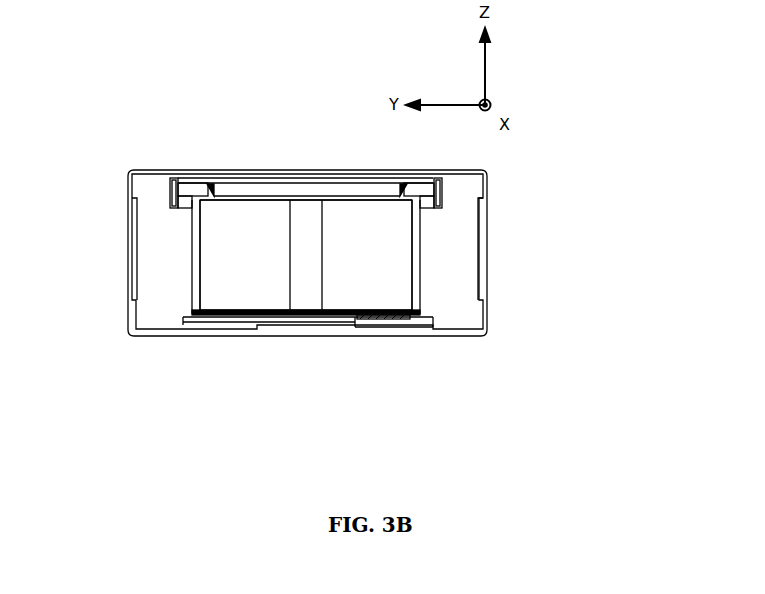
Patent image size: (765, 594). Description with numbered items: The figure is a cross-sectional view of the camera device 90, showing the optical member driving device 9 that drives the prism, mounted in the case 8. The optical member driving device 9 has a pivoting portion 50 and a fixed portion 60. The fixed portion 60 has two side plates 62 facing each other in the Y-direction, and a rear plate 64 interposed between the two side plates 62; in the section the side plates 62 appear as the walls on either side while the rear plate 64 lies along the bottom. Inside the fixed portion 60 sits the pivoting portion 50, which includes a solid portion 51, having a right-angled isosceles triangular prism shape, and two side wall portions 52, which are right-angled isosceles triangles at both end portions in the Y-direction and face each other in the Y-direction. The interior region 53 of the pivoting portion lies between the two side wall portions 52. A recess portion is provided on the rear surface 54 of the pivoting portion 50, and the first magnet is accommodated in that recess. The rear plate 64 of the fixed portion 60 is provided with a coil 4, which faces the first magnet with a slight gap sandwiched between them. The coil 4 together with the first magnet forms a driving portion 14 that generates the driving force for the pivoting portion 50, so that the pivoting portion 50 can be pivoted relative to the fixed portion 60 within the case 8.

The case 8 is at (492, 168).
The optical member driving device 9 is at (300, 118).
The camera device 90 is at (304, 234).
The pivoting portion 50 is at (304, 247).
The solid portion 51 is at (179, 190).
The side wall portions 52 is at (196, 258).
The holder interior 53 is at (230, 232).
The rear surface 54 is at (410, 318).
The fixed portion 60 is at (304, 309).
The side plates 62 is at (150, 282).
The rear plate 64 is at (220, 325).
The coil 4 is at (390, 318).
The driving portion 14 is at (346, 320).